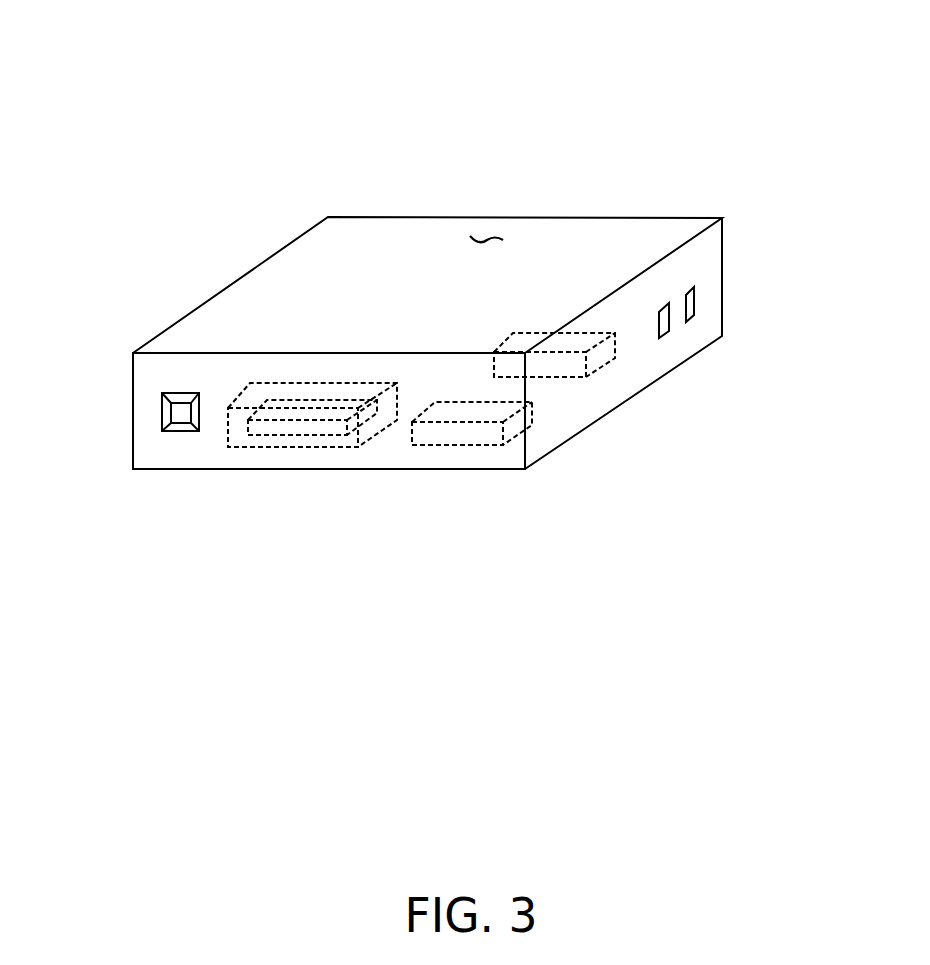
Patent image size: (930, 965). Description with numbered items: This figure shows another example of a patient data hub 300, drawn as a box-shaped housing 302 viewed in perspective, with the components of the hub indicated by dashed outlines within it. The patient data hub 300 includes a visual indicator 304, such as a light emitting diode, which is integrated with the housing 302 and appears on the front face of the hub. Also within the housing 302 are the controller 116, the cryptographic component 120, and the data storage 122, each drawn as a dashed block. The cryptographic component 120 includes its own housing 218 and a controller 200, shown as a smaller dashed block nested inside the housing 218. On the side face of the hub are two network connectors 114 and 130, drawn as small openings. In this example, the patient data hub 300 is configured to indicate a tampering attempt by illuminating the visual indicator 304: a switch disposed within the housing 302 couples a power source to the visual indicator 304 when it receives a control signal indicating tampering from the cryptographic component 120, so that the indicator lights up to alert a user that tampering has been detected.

The patient data hub 300 is at (397, 131).
The housing 302 is at (487, 240).
The visual indicator 304 is at (162, 397).
The cryptographic component 120 is at (246, 370).
The controller 200 is at (347, 428).
The housing 218 is at (228, 428).
The controller 116 is at (502, 432).
The data storage 122 is at (587, 365).
The network connector 114 is at (686, 322).
The network connector 130 is at (659, 338).